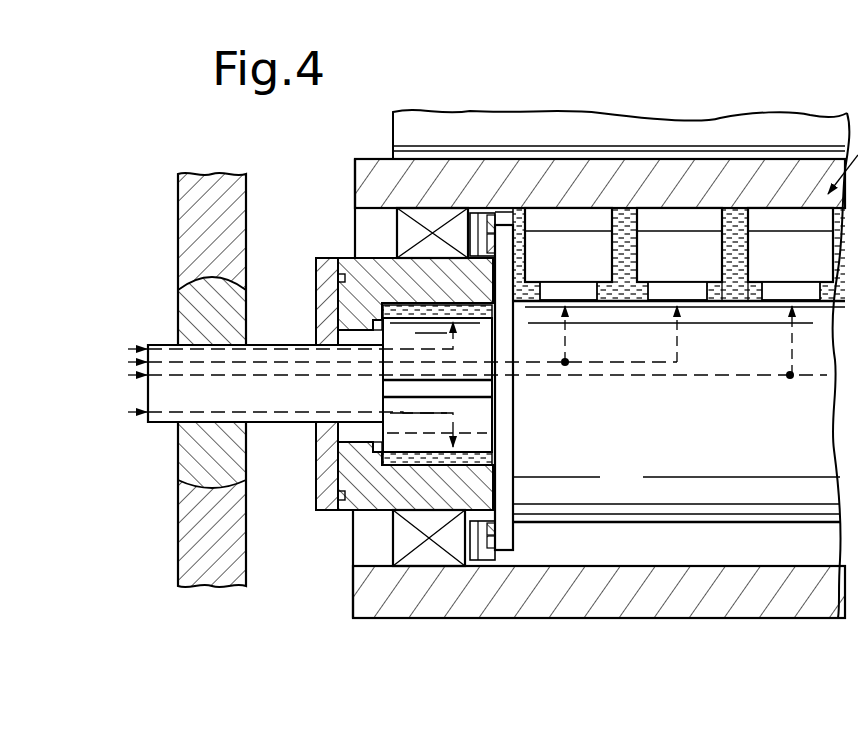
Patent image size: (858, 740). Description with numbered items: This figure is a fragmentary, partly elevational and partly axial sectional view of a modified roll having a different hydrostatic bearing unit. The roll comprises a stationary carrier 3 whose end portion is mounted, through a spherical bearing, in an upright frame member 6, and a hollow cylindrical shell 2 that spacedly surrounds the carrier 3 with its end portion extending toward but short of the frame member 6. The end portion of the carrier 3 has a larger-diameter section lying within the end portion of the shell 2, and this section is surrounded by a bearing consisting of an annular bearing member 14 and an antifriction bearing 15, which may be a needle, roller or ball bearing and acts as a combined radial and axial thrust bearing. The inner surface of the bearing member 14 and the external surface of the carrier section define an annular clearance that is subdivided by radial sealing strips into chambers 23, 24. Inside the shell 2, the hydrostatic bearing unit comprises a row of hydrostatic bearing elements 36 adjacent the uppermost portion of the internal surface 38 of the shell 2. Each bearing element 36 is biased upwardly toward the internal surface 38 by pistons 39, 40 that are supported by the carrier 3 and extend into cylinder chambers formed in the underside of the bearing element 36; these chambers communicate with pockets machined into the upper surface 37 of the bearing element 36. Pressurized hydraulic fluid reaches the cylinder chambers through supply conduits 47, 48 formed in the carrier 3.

The hollow cylindrical shell 2 is at (692, 599).
The stationary carrier 3 is at (636, 488).
The upright frame member 6 is at (836, 140).
The annular bearing member 14 is at (358, 278).
The antifriction bearing 15 is at (436, 220).
The chamber 23 is at (398, 304).
The chamber 24 is at (392, 460).
The hydrostatic bearing element 36 is at (573, 220).
The upper surface of bearing element 37 is at (795, 218).
The internal surface of shell 38 is at (731, 216).
The piston 39 is at (680, 322).
The piston 40 is at (770, 304).
The supply conduit 47 is at (478, 377).
The supply conduit 48 is at (828, 378).